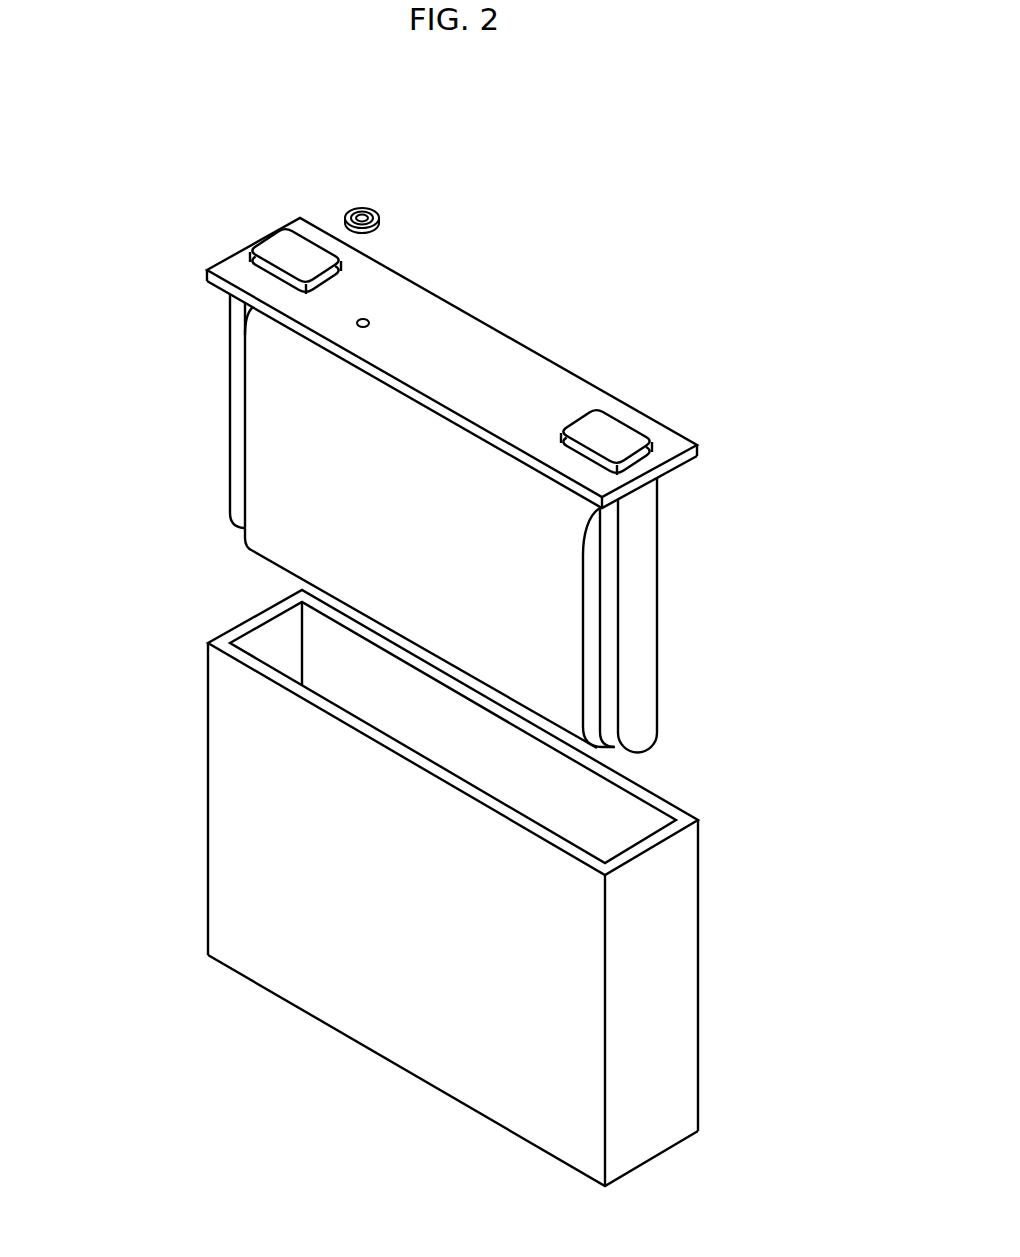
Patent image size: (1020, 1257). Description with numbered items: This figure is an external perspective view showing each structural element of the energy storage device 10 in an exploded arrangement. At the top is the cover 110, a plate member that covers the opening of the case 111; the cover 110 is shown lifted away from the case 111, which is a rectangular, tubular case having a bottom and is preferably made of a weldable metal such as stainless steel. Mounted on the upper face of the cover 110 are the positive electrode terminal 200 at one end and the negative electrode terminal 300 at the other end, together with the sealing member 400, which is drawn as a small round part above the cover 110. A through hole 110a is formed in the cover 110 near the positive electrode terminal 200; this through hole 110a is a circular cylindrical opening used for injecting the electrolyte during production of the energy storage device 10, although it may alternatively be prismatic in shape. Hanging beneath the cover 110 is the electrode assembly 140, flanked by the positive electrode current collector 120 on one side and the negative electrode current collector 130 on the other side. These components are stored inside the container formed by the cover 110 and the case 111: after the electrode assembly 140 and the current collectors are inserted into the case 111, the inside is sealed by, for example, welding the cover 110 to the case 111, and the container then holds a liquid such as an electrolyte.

The energy storage device 10 is at (651, 238).
The cover 110 is at (527, 373).
The through hole 110a is at (363, 316).
The case 111 is at (673, 943).
The positive electrode current collector 120 is at (237, 390).
The negative electrode current collector 130 is at (640, 533).
The electrode assembly 140 is at (433, 516).
The positive electrode terminal 200 is at (296, 252).
The negative electrode terminal 300 is at (603, 430).
The sealing member 400 is at (374, 207).